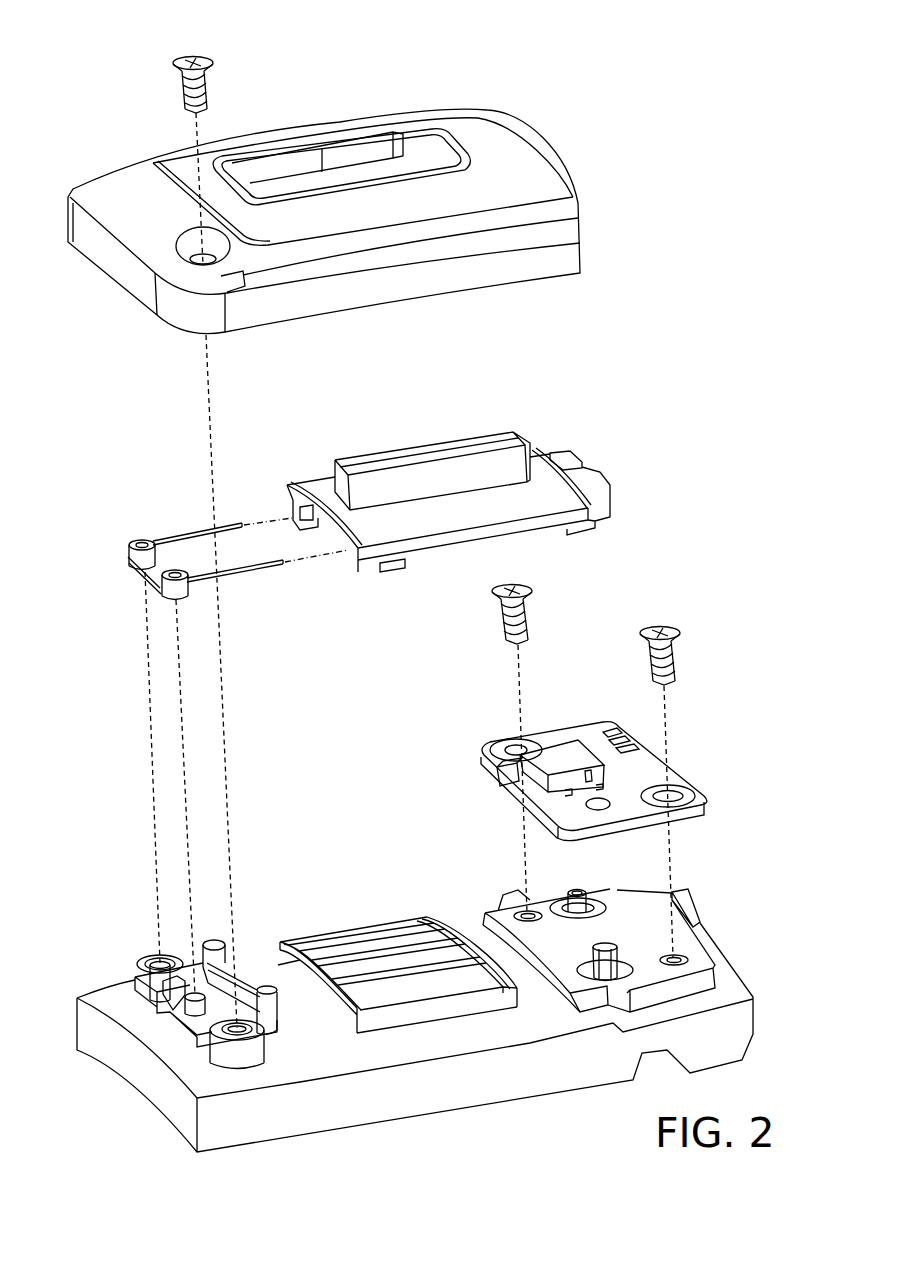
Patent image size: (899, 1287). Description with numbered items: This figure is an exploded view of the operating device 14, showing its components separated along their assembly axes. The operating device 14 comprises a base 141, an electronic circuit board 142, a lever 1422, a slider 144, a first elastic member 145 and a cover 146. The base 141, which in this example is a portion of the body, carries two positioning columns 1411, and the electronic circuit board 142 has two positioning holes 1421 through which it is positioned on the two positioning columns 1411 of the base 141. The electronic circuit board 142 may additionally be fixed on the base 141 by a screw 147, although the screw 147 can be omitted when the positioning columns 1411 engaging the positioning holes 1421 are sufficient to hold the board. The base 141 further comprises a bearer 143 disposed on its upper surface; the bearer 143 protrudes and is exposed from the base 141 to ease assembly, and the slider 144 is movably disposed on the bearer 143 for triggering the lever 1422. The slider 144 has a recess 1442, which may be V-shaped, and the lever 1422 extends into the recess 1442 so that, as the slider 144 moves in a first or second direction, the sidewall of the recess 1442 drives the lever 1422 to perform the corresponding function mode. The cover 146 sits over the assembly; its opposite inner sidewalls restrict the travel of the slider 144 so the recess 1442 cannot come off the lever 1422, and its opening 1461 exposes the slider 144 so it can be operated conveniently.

The operating device 14 is at (83, 61).
The base 141 is at (740, 1021).
The positioning columns 1411 is at (577, 891).
The electronic circuit board 142 is at (697, 797).
The positioning holes 1421 is at (612, 803).
The lever 1422 is at (517, 776).
The bearer 143 is at (288, 941).
The slider 144 is at (460, 437).
The recess 1442 is at (580, 467).
The first elastic member 145 is at (255, 550).
The cover 146 is at (578, 207).
The opening 1461 is at (378, 170).
The screw 147 is at (530, 594).